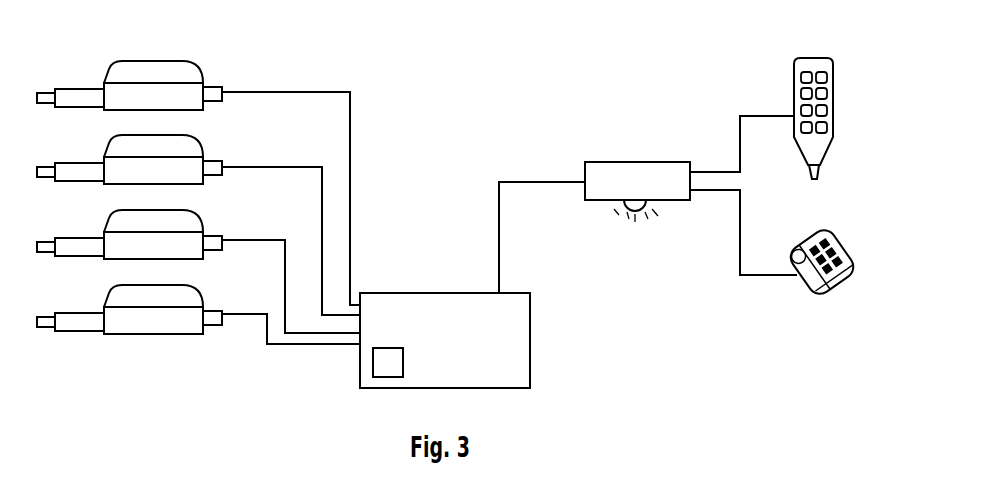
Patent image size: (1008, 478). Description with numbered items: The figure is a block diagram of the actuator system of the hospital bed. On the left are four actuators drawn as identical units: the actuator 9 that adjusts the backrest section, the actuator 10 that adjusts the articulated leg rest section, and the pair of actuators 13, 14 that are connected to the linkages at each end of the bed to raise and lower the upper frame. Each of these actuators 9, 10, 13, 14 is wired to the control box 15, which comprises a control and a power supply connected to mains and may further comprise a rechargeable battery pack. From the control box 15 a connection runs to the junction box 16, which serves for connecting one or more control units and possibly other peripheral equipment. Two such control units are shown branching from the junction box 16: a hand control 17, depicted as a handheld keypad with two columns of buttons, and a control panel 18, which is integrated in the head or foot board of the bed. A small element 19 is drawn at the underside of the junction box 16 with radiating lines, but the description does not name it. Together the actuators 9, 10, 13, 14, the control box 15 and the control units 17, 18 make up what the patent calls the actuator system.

The actuator 9 is at (198, 67).
The actuator 10 is at (198, 143).
The actuator 13 is at (198, 215).
The actuator 14 is at (198, 290).
The control box 15 is at (438, 292).
The junction box 16 is at (632, 159).
The hand control 17 is at (835, 93).
The control panel 18 is at (842, 243).
The indicator light 19 is at (630, 202).